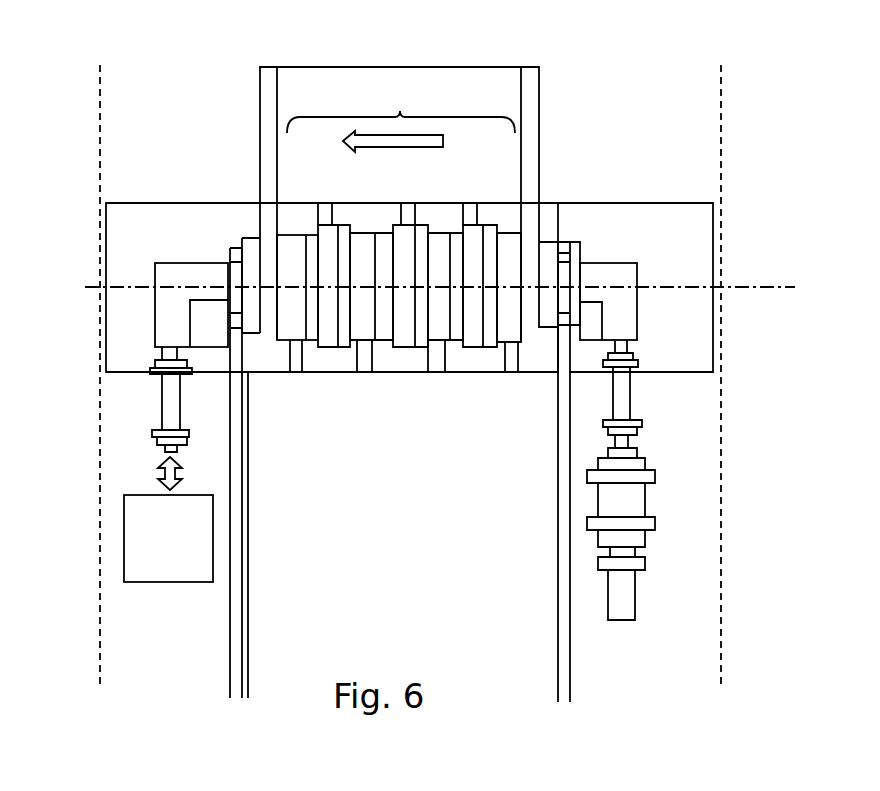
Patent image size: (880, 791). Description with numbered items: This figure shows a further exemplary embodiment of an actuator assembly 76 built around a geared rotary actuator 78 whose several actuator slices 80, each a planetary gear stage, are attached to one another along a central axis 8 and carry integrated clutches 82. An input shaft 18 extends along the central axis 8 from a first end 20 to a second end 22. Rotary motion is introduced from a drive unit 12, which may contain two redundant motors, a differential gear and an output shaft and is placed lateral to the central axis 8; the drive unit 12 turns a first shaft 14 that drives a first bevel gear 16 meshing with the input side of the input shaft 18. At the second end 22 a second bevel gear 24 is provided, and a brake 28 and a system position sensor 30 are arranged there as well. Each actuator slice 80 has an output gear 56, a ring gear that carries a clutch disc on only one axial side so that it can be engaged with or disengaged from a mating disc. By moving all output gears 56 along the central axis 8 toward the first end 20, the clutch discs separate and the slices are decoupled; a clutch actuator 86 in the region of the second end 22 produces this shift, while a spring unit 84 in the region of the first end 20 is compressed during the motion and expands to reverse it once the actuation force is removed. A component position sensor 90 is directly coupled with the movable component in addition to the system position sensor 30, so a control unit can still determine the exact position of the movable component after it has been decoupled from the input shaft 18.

The central axis 8 is at (770, 285).
The drive unit 12 is at (138, 537).
The first shaft 14 is at (168, 402).
The first bevel gear 16 is at (172, 317).
The input shaft 18 is at (193, 268).
The first end 20 is at (265, 385).
The second end 22 is at (615, 220).
The second bevel gear 24 is at (666, 352).
The brake 28 is at (630, 500).
The system position sensor 30 is at (622, 592).
The output gear 56 is at (327, 245).
The actuator assembly 76 is at (567, 72).
The geared rotary actuator 78 is at (401, 117).
The actuator slices 80 is at (330, 353).
The integrated clutches 82 is at (345, 220).
The spring unit 84 is at (250, 258).
The clutch actuator 86 is at (548, 252).
The component position sensor 90 is at (575, 308).